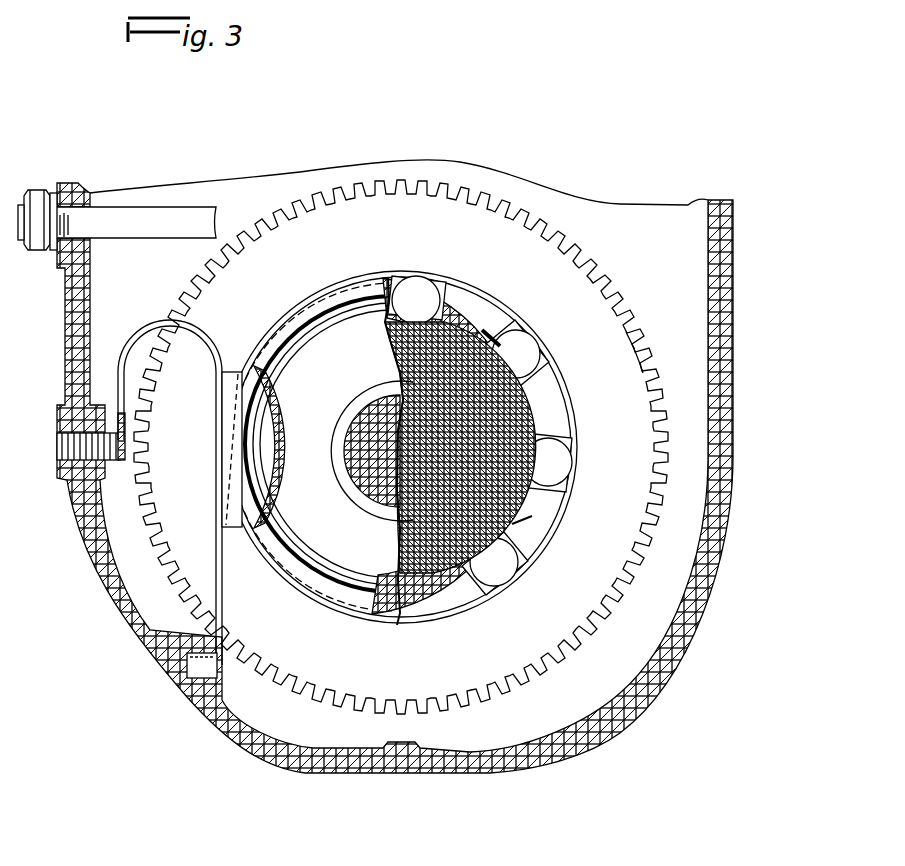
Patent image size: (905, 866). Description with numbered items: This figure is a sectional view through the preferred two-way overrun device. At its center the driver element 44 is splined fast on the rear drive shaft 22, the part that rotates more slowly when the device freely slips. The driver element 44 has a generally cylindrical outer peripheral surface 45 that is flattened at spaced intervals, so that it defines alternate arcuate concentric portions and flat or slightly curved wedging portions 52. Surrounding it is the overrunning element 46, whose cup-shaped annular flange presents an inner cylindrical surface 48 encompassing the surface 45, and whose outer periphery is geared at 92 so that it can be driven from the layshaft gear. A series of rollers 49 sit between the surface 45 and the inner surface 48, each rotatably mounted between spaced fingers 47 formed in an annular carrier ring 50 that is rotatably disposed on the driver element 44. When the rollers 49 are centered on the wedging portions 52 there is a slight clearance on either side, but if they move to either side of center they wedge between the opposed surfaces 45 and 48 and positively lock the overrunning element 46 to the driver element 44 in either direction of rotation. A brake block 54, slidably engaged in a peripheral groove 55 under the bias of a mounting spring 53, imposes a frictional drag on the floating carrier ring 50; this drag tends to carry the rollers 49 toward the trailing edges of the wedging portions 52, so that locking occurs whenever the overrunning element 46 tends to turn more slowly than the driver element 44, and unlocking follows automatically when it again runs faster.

The rear drive shaft 22 is at (378, 497).
The driver element 44 is at (400, 350).
The outer peripheral surface 45 is at (566, 407).
The overrunning element 46 is at (560, 305).
The fingers 47 is at (480, 302).
The inner cylindrical surface 48 is at (508, 318).
The rollers 49 is at (538, 348).
The carrier ring 50 is at (356, 296).
The wedging portions 52 is at (532, 520).
The mounting spring 53 is at (190, 337).
The brake block 54 is at (222, 432).
The peripheral groove 55 is at (246, 372).
The gear 92 is at (640, 348).